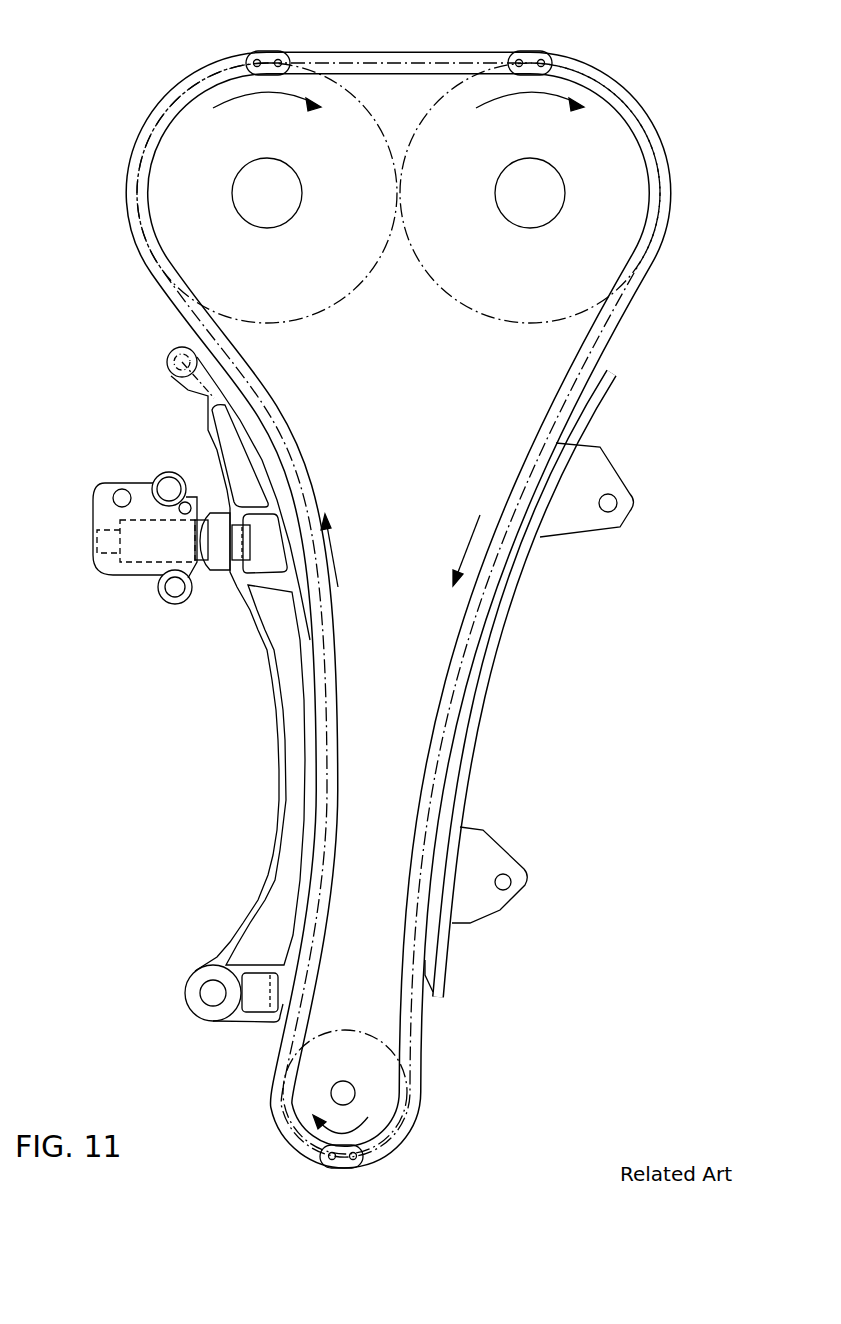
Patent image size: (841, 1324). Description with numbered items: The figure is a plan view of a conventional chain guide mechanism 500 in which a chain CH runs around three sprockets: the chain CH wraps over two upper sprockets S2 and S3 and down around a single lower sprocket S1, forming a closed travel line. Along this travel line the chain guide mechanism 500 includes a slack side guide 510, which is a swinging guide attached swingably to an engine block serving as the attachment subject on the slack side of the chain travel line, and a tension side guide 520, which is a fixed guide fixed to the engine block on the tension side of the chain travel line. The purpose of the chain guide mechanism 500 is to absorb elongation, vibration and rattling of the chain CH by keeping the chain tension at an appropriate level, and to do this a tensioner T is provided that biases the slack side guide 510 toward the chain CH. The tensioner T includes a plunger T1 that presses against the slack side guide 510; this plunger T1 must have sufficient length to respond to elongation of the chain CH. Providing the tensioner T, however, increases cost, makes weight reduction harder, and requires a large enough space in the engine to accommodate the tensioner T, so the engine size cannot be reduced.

The chain guide mechanism 500 is at (100, 80).
The chain CH is at (600, 320).
The crankshaft sprocket S1 is at (377, 1093).
The camshaft sprocket S2 is at (182, 186).
The camshaft sprocket S3 is at (600, 177).
The slack side guide 510 is at (280, 883).
The tension side guide 520 is at (488, 738).
The tensioner T is at (166, 543).
The plunger T1 is at (202, 547).